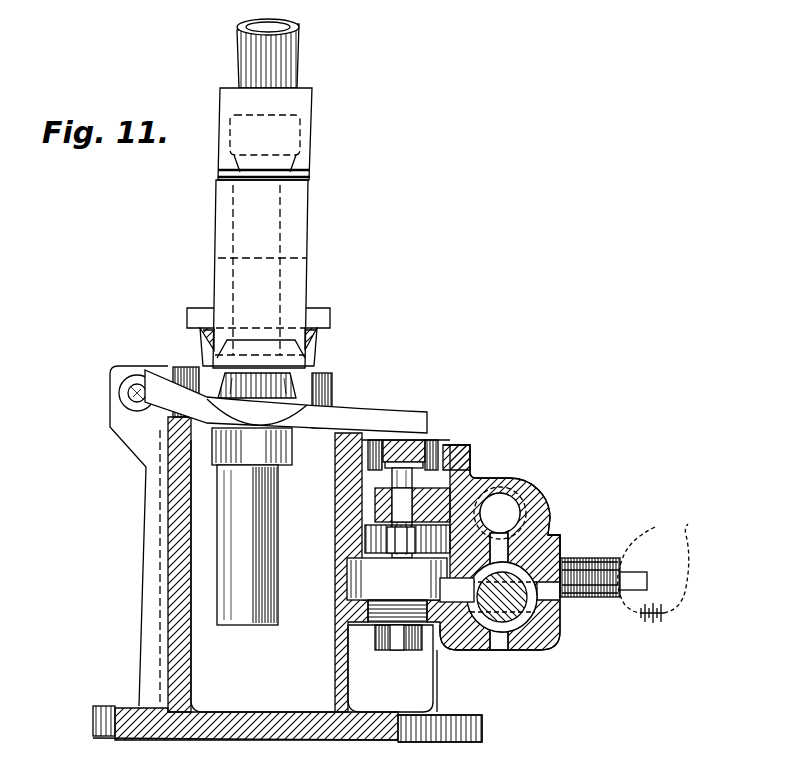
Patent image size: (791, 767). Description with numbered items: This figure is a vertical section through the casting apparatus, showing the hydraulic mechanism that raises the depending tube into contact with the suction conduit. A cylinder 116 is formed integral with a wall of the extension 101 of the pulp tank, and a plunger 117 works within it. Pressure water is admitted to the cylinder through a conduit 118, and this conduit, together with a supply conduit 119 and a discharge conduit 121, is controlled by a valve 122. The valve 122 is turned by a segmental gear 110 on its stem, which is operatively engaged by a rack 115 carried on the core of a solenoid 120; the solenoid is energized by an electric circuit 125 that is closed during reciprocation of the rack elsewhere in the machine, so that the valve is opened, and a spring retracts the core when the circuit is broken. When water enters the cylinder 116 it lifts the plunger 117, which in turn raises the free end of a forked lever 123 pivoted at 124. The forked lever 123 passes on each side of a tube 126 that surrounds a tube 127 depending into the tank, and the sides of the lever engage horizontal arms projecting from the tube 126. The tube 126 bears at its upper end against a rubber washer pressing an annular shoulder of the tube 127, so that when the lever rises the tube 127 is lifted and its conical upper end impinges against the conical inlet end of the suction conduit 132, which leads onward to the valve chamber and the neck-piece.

The extension 101 is at (287, 579).
The segmental gear 110 is at (547, 627).
The rack 115 is at (547, 531).
The cylinder 116 is at (398, 559).
The plunger 117 is at (447, 441).
The conduit 118 is at (444, 588).
The supply conduit 119 is at (500, 513).
The solenoid 120 is at (601, 560).
The discharge conduit 121 is at (495, 650).
The valve 122 is at (557, 614).
The forked lever 123 is at (381, 406).
The pivot 124 is at (119, 393).
The electric circuit 125 is at (655, 528).
The tube 126 is at (252, 416).
The tube 127 is at (247, 545).
The suction conduit 132 is at (303, 208).